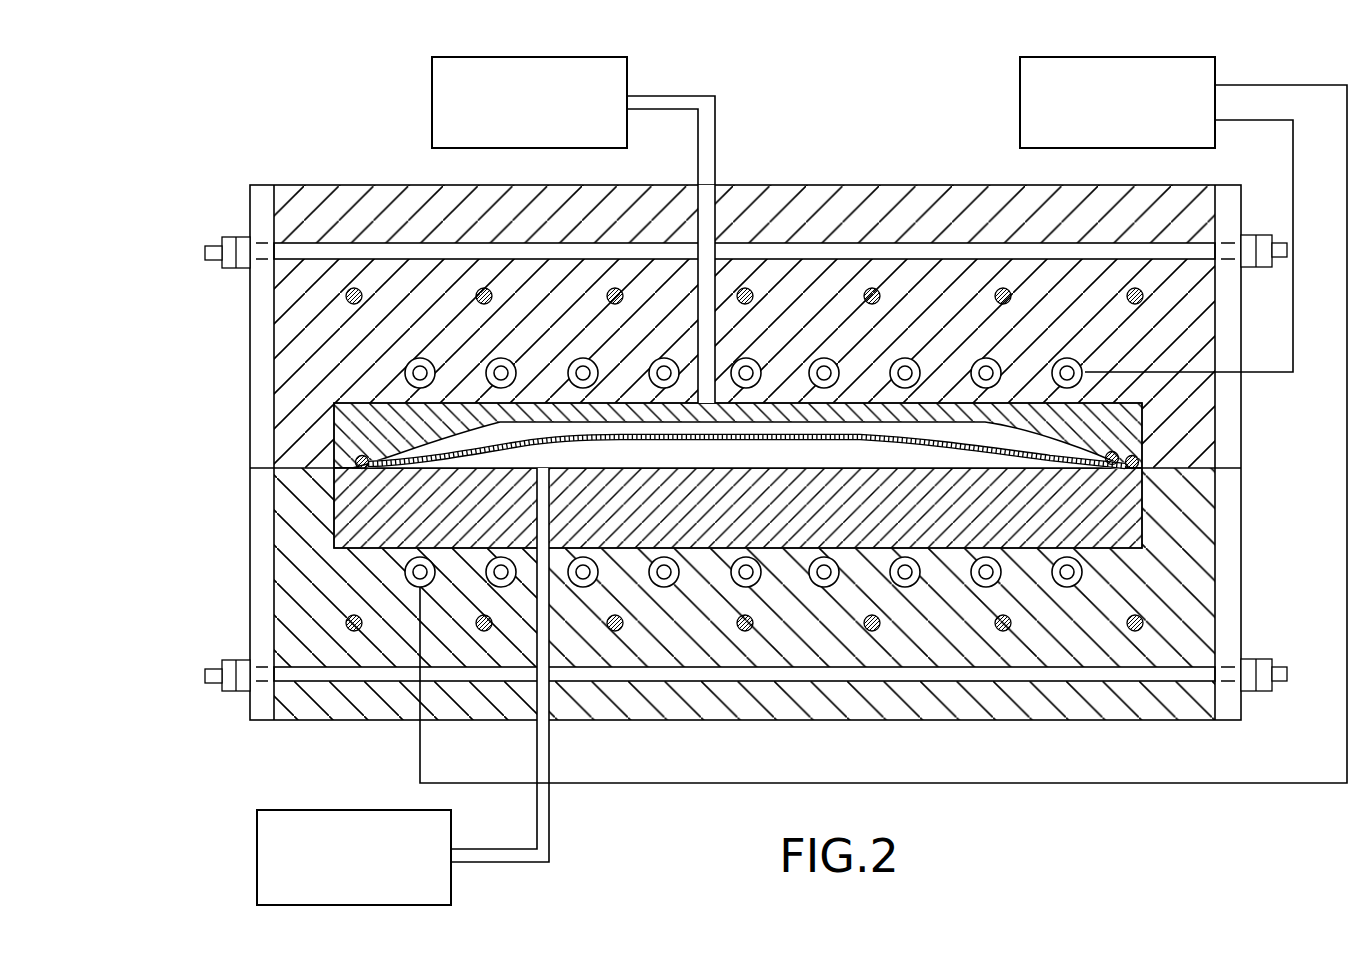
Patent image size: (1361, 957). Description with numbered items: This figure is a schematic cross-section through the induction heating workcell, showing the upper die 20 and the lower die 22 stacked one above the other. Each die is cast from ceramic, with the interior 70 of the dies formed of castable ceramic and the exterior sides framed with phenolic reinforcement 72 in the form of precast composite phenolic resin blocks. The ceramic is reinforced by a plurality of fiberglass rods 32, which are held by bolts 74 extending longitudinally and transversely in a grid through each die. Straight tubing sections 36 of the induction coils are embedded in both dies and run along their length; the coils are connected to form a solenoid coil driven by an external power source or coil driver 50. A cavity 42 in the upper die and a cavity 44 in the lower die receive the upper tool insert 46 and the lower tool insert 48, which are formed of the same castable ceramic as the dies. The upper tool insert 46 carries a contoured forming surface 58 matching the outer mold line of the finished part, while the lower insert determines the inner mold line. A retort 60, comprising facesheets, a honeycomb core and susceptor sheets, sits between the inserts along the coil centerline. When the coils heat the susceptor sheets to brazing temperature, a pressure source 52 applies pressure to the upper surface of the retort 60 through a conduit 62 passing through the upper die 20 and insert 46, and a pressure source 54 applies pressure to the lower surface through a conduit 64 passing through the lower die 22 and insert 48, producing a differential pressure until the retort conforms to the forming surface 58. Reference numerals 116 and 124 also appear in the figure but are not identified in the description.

The upper die 20 is at (827, 165).
The lower die 22 is at (1105, 733).
The fiberglass rods 32 is at (325, 248).
The straight tubing section 36 is at (420, 372).
The cavity 42 is at (1212, 374).
The cavity 44 is at (1128, 468).
The upper tool insert 46 is at (356, 420).
The lower tool insert 48 is at (352, 528).
The coil driver 50 is at (1020, 106).
The pressure source 52 is at (432, 103).
The pressure source 54 is at (257, 857).
The forming surface 58 is at (1114, 452).
The retort 60 is at (1120, 470).
The conduit 62 is at (733, 184).
The conduit 64 is at (560, 850).
The interior of the dies 70 is at (363, 186).
The phenolic reinforcement 72 is at (262, 346).
The bolts 74 is at (232, 269).
The edge seal 116 is at (1133, 458).
The clamp 124 is at (352, 462).